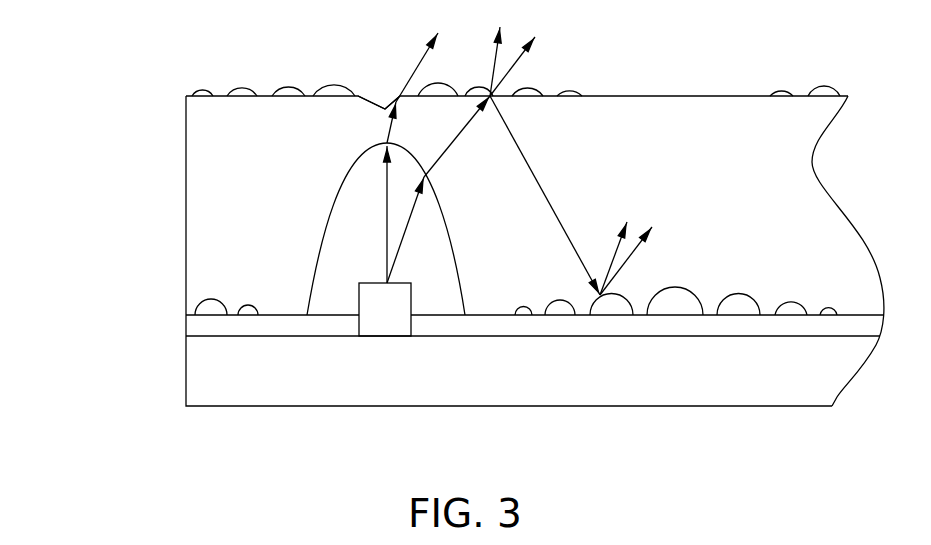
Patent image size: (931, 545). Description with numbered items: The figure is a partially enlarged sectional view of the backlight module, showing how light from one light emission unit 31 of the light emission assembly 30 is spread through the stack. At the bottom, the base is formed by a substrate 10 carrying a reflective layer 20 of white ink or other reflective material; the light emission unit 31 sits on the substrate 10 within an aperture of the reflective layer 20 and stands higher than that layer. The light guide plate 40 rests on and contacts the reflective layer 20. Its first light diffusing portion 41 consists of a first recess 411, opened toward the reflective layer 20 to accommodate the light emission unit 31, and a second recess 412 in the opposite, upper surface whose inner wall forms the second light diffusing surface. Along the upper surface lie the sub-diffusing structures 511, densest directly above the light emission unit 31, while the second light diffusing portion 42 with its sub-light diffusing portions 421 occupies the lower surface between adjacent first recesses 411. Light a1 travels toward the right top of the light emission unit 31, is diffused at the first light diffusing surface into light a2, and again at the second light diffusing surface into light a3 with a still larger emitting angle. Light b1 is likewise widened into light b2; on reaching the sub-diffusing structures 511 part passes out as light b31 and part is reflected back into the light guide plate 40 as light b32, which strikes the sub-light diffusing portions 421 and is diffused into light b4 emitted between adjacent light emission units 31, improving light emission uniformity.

The substrate 10 is at (220, 382).
The reflective layer 20 is at (202, 328).
The light emission assembly 30 is at (385, 318).
The light emission unit 31 is at (445, 368).
The light guide plate 40 is at (218, 272).
The first light diffusing portion 41 is at (252, 205).
The first recess 411 is at (350, 228).
The second recess 412 is at (373, 105).
The second light diffusing portion 42 is at (668, 303).
The sub-light diffusing portion 421 is at (516, 370).
The sub-diffusing structure 511 is at (327, 84).
The light a1 is at (374, 214).
The light a2 is at (407, 123).
The light a3 is at (427, 53).
The light b1 is at (413, 230).
The light b2 is at (457, 136).
The light b31 is at (533, 61).
The light b32 is at (545, 195).
The light b4 is at (630, 246).